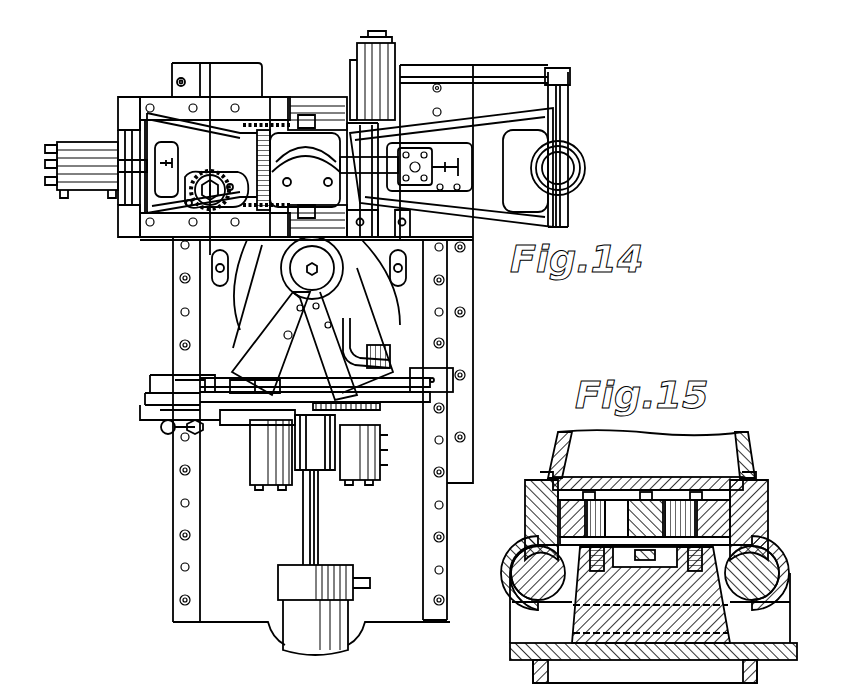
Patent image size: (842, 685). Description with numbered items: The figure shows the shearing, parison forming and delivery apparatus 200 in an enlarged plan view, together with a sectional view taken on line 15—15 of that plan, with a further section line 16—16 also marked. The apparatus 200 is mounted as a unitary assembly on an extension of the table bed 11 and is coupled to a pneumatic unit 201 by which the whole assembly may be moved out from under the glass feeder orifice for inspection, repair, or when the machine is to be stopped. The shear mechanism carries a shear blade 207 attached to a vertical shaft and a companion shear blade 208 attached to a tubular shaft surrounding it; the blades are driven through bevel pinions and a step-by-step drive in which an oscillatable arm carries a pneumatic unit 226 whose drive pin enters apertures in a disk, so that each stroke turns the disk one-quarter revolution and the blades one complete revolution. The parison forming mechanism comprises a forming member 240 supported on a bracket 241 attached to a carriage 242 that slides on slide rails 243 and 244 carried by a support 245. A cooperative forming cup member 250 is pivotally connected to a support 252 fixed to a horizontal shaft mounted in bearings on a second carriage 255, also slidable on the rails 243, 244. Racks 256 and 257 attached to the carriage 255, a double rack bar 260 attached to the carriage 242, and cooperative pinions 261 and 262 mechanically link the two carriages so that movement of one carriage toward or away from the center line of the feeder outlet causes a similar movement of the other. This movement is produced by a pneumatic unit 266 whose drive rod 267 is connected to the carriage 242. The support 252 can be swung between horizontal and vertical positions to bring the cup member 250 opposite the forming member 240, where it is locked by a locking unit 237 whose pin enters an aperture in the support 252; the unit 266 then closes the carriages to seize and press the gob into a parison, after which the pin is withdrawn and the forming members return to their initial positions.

In FIG. 14, the table bed 11 is at (460, 410).
In FIG. 14, the section line 15— 15 is at (223, 74).
In FIG. 14, the section line 16— 16 is at (30, 96).
In FIG. 14, the shearing, parison forming and delivery apparatus 200 is at (171, 300).
In FIG. 14, the pneumatic unit 201 is at (295, 608).
In FIG. 14, the shear blade 207 is at (350, 373).
In FIG. 14, the companion shear blade 208 is at (260, 370).
In FIG. 14, the pneumatic unit 226 is at (273, 470).
In FIG. 14, the locking unit 237 is at (367, 62).
In FIG. 14, the forming member 240 is at (273, 150).
In FIG. 14, the bracket 241 is at (222, 107).
In FIG. 15, the bracket 241 is at (733, 477).
In FIG. 14, the carriage 242 is at (187, 117).
In FIG. 15, the carriage 242 is at (537, 583).
In FIG. 15, the slide rail 243 is at (515, 600).
In FIG. 15, the slide rail 244 is at (750, 580).
In FIG. 15, the support 245 is at (522, 633).
In FIG. 14, the forming cup member 250 is at (583, 187).
In FIG. 14, the support 252 is at (485, 200).
In FIG. 14, the carriage 255 is at (322, 97).
In FIG. 14, the rack 256 is at (283, 104).
In FIG. 15, the rack 256 is at (550, 498).
In FIG. 14, the rack 257 is at (290, 230).
In FIG. 15, the rack 257 is at (737, 517).
In FIG. 14, the double rack bar 260 is at (185, 172).
In FIG. 15, the double rack bar 260 is at (660, 507).
In FIG. 15, the pinion 261 is at (580, 500).
In FIG. 14, the pinion 262 is at (248, 153).
In FIG. 15, the pinion 262 is at (720, 503).
In FIG. 14, the pneumatic unit 266 is at (88, 130).
In FIG. 14, the drive rod 267 is at (130, 160).